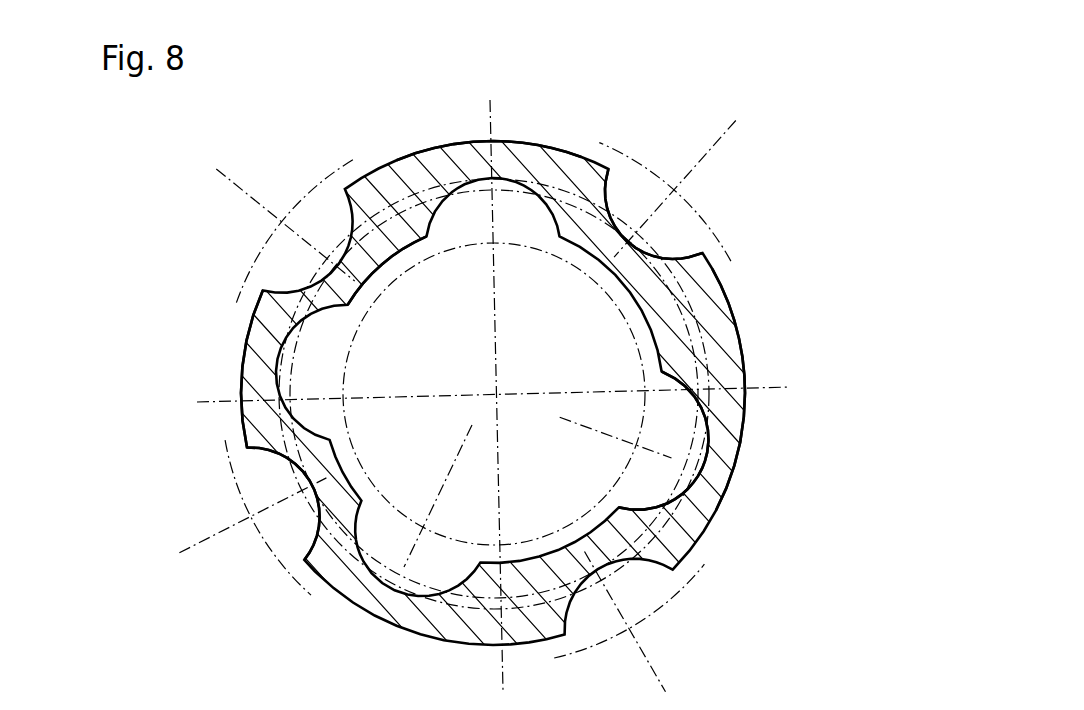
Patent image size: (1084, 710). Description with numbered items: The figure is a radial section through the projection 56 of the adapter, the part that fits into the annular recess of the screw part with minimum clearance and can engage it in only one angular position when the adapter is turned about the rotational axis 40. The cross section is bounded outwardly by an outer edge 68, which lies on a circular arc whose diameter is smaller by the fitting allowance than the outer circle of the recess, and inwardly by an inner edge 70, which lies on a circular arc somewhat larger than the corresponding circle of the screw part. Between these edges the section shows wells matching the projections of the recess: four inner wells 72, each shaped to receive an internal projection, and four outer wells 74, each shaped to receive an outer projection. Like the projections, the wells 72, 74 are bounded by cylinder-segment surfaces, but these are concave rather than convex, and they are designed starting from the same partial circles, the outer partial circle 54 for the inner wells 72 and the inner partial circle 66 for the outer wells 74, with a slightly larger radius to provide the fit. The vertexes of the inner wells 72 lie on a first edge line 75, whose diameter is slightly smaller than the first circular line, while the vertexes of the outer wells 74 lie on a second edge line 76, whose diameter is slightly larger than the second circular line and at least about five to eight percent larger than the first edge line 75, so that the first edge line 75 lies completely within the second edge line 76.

The rotational axis 40 is at (496, 394).
The outer partial circle 54 is at (237, 487).
The projection 56 is at (725, 323).
The inner partial circle 66 is at (510, 245).
The outer edge 68 is at (752, 442).
The inner edge 70 is at (382, 282).
The inner well 72 is at (620, 188).
The outer well 74 is at (675, 485).
The first edge line 75 is at (280, 362).
The second edge line 76 is at (443, 182).